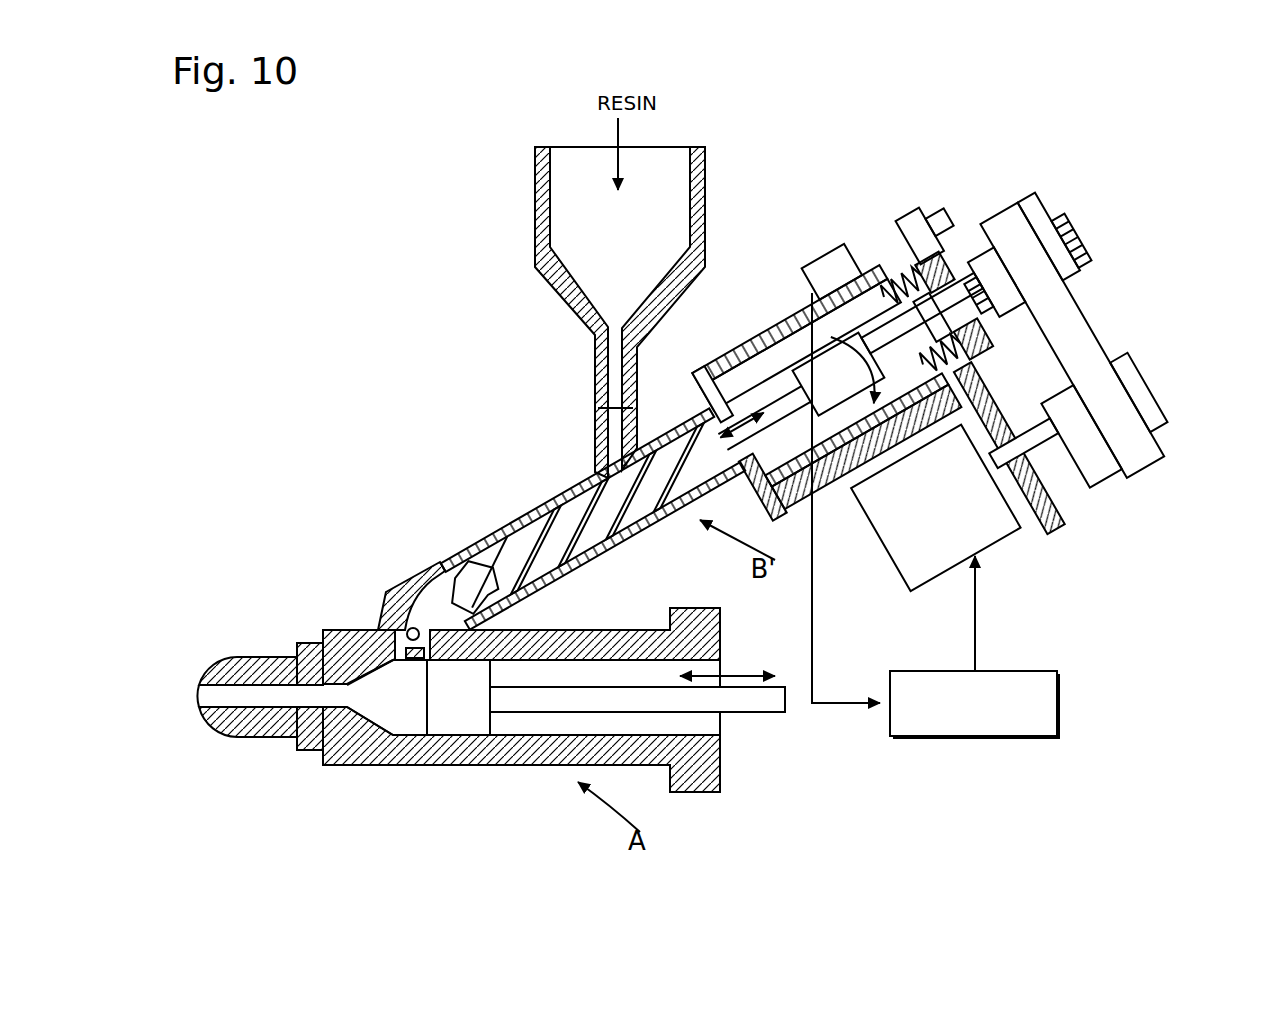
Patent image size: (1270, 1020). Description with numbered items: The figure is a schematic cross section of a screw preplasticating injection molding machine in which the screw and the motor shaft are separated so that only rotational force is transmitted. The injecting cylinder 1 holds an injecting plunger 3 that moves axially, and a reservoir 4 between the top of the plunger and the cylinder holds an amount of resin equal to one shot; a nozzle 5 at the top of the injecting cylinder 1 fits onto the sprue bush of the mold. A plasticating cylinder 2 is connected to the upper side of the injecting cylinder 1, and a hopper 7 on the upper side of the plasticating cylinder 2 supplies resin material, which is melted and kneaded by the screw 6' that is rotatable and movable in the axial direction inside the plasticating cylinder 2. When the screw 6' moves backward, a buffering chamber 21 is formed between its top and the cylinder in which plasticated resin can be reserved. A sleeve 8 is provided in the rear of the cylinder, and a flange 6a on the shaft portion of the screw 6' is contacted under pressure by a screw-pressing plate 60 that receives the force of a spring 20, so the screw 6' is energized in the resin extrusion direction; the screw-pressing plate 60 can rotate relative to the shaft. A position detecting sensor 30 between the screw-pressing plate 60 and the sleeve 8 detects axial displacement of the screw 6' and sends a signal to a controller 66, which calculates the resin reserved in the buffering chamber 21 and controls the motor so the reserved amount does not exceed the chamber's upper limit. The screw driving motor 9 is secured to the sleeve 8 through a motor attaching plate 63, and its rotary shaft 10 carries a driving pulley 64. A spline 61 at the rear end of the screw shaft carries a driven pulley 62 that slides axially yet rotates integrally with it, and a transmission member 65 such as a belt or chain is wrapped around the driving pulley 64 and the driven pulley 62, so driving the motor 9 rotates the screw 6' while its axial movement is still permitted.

The injecting cylinder 1 is at (535, 768).
The plasticating cylinder 2 is at (552, 588).
The injecting plunger 3 is at (462, 718).
The reservoir 4 is at (400, 718).
The nozzle 5 is at (237, 738).
The screw 6' is at (628, 496).
The flange 6a is at (933, 305).
The hopper 7 is at (535, 222).
The sleeve 8 is at (765, 340).
The screw driving motor 9 is at (905, 552).
The rotary shaft 10 is at (1044, 455).
The spring 20 is at (895, 280).
The buffering chamber 21 is at (432, 588).
The position detecting sensor 30 is at (815, 265).
The screw-pressing plate 60 is at (985, 355).
The spline 61 is at (1084, 242).
The driven pulley 62 is at (1043, 213).
The motor attaching plate 63 is at (1057, 528).
The driving pulley 64 is at (1150, 400).
The transmission member 65 is at (1092, 333).
The controller 66 is at (1060, 700).